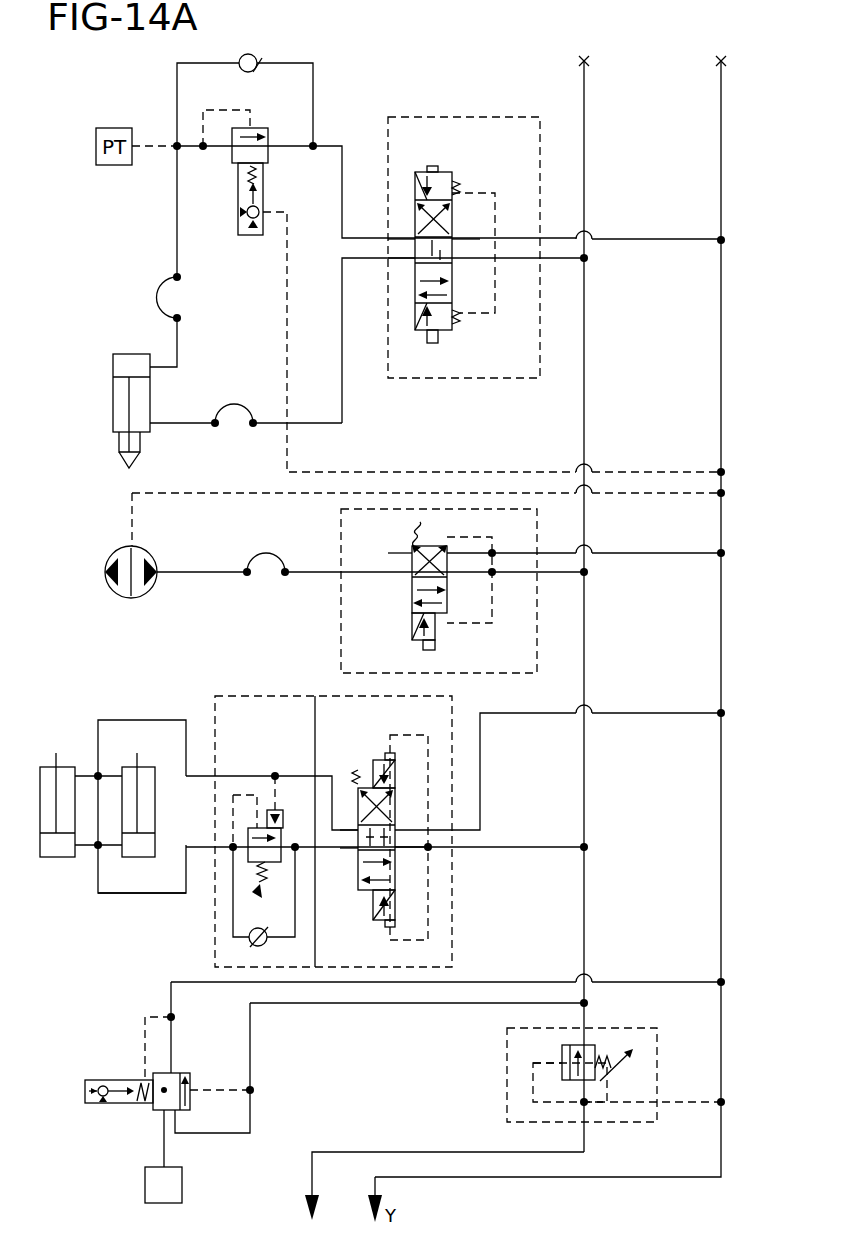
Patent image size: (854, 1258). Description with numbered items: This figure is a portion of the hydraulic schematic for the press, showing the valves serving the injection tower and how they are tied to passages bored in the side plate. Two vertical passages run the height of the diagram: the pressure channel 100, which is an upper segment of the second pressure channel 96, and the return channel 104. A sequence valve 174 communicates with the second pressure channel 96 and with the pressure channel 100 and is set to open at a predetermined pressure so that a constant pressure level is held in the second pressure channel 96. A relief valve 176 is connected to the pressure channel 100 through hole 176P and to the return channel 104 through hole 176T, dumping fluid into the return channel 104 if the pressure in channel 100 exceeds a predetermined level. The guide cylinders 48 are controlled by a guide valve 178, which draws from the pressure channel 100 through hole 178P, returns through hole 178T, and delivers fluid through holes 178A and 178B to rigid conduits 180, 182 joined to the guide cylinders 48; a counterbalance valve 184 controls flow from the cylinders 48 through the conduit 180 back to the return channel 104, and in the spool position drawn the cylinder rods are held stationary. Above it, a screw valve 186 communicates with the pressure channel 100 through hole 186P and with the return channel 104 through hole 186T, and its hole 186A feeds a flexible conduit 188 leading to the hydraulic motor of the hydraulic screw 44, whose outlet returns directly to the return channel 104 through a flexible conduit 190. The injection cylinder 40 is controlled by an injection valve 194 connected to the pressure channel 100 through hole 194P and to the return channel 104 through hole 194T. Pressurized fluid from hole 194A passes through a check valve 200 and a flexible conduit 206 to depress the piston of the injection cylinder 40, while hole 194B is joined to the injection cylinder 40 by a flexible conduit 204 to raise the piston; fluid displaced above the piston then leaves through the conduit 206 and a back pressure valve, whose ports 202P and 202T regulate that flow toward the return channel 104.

The check valve 200 is at (254, 52).
The tank port of pressure reducing valve 202 202T is at (270, 140).
The hole 202P is at (232, 150).
The flexible conduit 206 is at (177, 246).
The injection cylinder 40 is at (150, 413).
The flexible conduit 204 is at (342, 370).
The injection valve 194 is at (540, 117).
The hole 194A is at (414, 236).
The hole 194T is at (452, 236).
The hole 194P is at (452, 260).
The hole 194B is at (414, 266).
The pressure channel 100 is at (588, 428).
The return channel 104 is at (723, 358).
The flexible conduit 190 is at (187, 493).
The hydraulically operated screw 44 is at (158, 550).
The screw valve 186 is at (341, 511).
The hole 186A is at (412, 566).
The hole 186T is at (447, 551).
The hole 186P is at (452, 582).
The flexible conduit 188 is at (290, 576).
The rigid conduit 182 is at (130, 720).
The guide cylinders 48 is at (118, 824).
The rigid conduit 180 is at (130, 893).
The counterbalance valve 184 is at (215, 945).
The guide valve 178 is at (455, 716).
The hole 178B is at (356, 824).
The hole 178T is at (396, 829).
The hole 178P is at (396, 848).
The hole 178A is at (358, 850).
The relief valve 176 is at (153, 1118).
The hole 176T is at (174, 1070).
The hole 176P is at (172, 1112).
The sequence valve 174 is at (507, 1050).
The second pressure channel 96 is at (362, 1152).